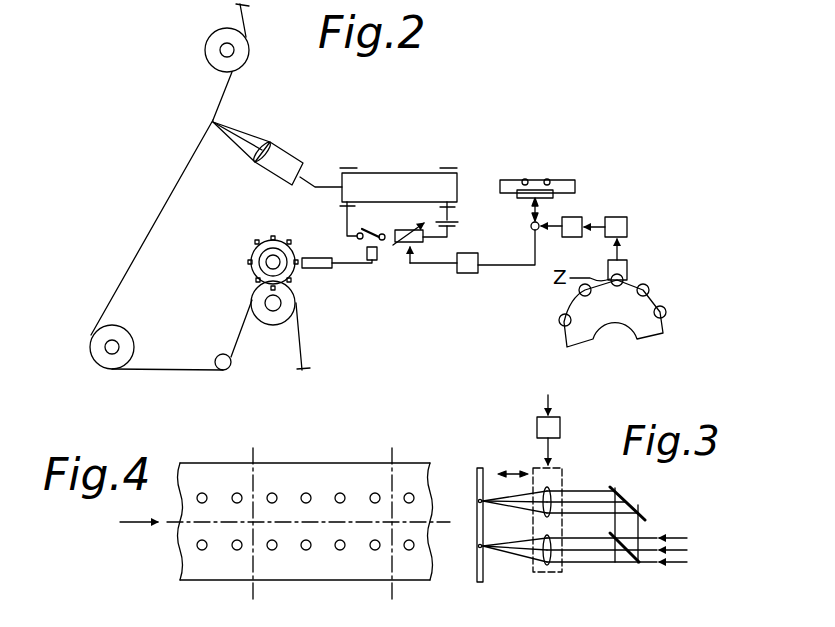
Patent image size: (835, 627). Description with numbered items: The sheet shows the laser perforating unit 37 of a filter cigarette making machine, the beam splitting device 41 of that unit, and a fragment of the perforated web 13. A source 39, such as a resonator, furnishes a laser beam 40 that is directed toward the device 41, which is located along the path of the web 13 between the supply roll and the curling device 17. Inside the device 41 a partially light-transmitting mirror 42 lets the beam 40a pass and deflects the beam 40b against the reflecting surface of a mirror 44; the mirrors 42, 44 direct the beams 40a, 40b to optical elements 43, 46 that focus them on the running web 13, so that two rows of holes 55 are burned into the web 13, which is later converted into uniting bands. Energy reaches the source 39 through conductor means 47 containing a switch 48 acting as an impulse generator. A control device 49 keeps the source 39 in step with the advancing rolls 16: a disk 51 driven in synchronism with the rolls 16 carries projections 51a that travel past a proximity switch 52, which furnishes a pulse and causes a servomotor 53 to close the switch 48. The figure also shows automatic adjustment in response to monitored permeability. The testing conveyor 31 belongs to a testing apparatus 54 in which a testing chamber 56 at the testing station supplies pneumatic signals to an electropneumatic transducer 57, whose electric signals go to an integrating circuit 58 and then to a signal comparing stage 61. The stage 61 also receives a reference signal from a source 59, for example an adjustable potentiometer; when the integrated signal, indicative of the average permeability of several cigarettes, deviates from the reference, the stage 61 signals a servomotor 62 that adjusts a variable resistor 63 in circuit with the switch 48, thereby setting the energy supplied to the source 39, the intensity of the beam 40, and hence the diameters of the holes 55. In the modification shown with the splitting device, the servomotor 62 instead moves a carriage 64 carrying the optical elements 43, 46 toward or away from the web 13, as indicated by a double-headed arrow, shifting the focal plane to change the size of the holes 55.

In FIG. 2, the web 13 is at (173, 193).
In FIG. 3, the web 13 is at (475, 570).
In FIG. 4, the web 13 is at (297, 473).
In FIG. 2, the advancing rolls 16 is at (270, 324).
In FIG. 2, the curling device 17 is at (222, 357).
In FIG. 2, the testing conveyor 31 is at (645, 307).
In FIG. 2, the first perforating unit 37 is at (344, 138).
In FIG. 2, the source 39 is at (388, 182).
In FIG. 2, the laser beam 40 is at (305, 177).
In FIG. 3, the laser beam 40 is at (675, 537).
In FIG. 3, the discrete beam 40a is at (598, 563).
In FIG. 3, the discrete beam 40b is at (592, 490).
In FIG. 2, the beam splitting device 41 is at (282, 160).
In FIG. 3, the beam splitting device 41 is at (578, 493).
In FIG. 3, the partially light-transmitting mirror 42 is at (637, 563).
In FIG. 3, the optical element 43 is at (548, 562).
In FIG. 3, the mirror 44 is at (628, 494).
In FIG. 3, the optical element 46 is at (562, 488).
In FIG. 2, the conductor means 47 is at (347, 214).
In FIG. 2, the switch 48 is at (386, 250).
In FIG. 2, the control device 49 is at (320, 276).
In FIG. 2, the disk 51 is at (235, 242).
In FIG. 2, the projections 51a is at (268, 240).
In FIG. 2, the proximity switch 52 is at (332, 266).
In FIG. 2, the servomotor 53 is at (377, 262).
In FIG. 2, the testing apparatus 54 is at (615, 192).
In FIG. 3, the holes 55 is at (478, 499).
In FIG. 4, the holes 55 is at (340, 546).
In FIG. 2, the testing chamber 56 is at (627, 263).
In FIG. 2, the electropneumatic transducer 57 is at (625, 225).
In FIG. 2, the integrating circuit 58 is at (577, 220).
In FIG. 2, the source of reference signals 59 is at (517, 199).
In FIG. 2, the signal comparing stage 61 is at (531, 226).
In FIG. 2, the servomotor 62 is at (470, 273).
In FIG. 3, the servomotor 62 is at (553, 420).
In FIG. 2, the variable resistor 63 is at (425, 232).
In FIG. 3, the carriage 64 is at (551, 500).